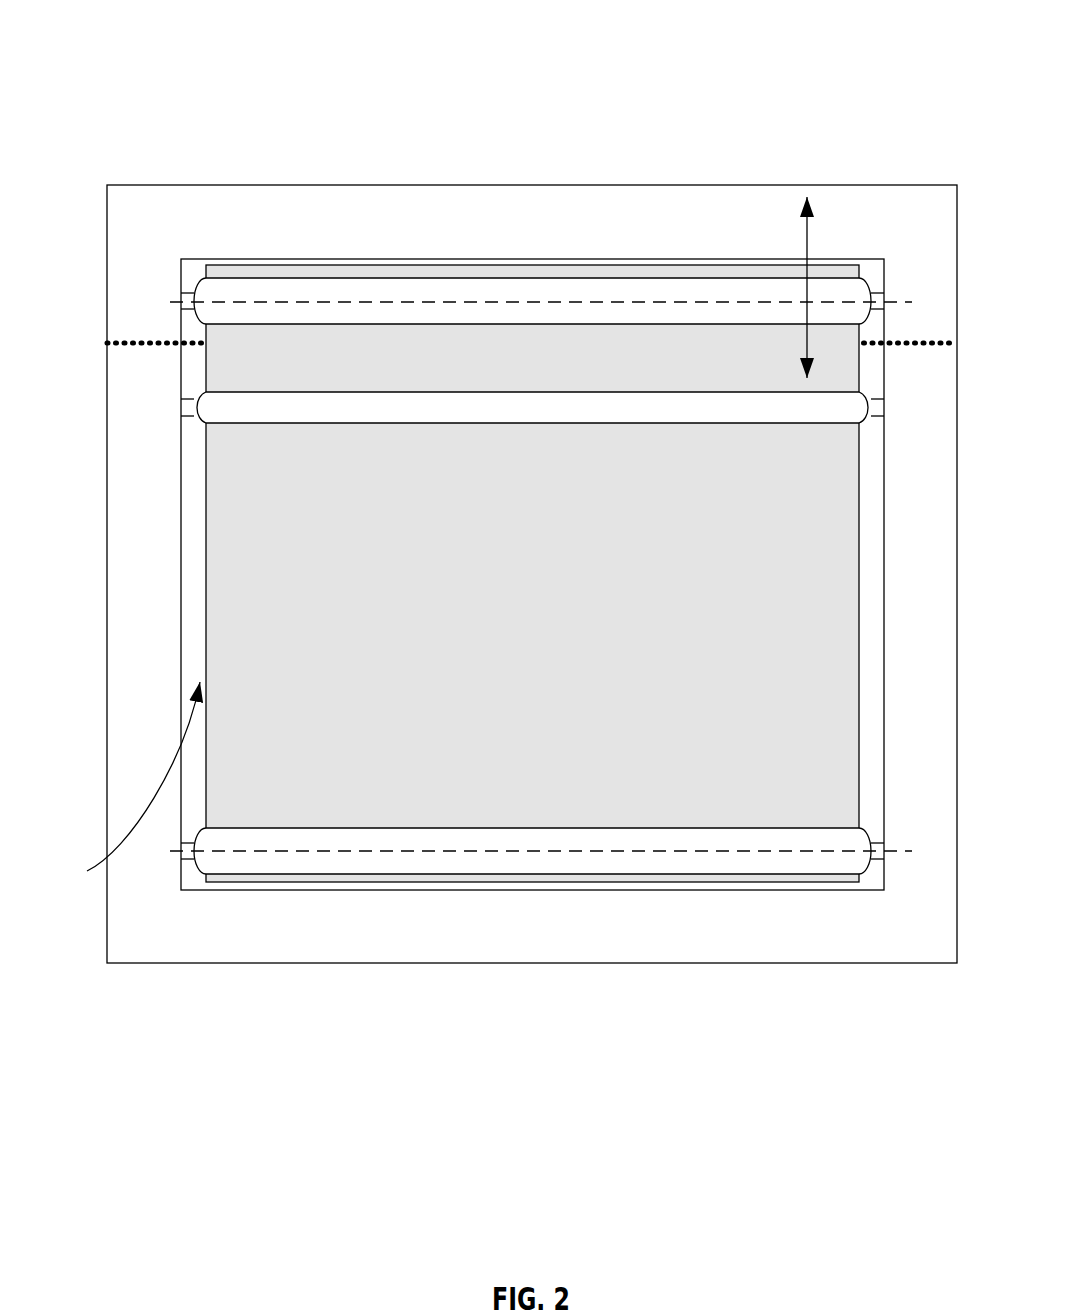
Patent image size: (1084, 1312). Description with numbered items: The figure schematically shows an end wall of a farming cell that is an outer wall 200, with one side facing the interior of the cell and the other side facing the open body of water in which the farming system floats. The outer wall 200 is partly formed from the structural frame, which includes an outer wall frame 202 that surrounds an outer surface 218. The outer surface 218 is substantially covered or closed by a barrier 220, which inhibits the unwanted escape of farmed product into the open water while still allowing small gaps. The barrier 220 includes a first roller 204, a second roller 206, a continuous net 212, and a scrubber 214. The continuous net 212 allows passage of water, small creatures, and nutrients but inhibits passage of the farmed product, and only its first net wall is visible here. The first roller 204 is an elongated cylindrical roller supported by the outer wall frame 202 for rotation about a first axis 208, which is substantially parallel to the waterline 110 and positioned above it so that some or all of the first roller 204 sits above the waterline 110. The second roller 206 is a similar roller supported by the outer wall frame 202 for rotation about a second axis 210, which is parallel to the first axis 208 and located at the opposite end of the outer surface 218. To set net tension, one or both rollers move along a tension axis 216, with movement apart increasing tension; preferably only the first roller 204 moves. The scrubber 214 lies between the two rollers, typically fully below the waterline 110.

The outer wall 200 is at (499, 540).
The outer wall frame 202 is at (280, 937).
The first roller 204 is at (718, 287).
The second roller 206 is at (620, 860).
The first axis 208 is at (463, 302).
The second axis 210 is at (793, 851).
The continuous net 212 is at (449, 588).
The scrubber 214 is at (316, 408).
The tension axis 216 is at (807, 248).
The outer surface 218 is at (122, 791).
The barrier 220 is at (876, 872).
The waterline 110 is at (167, 345).